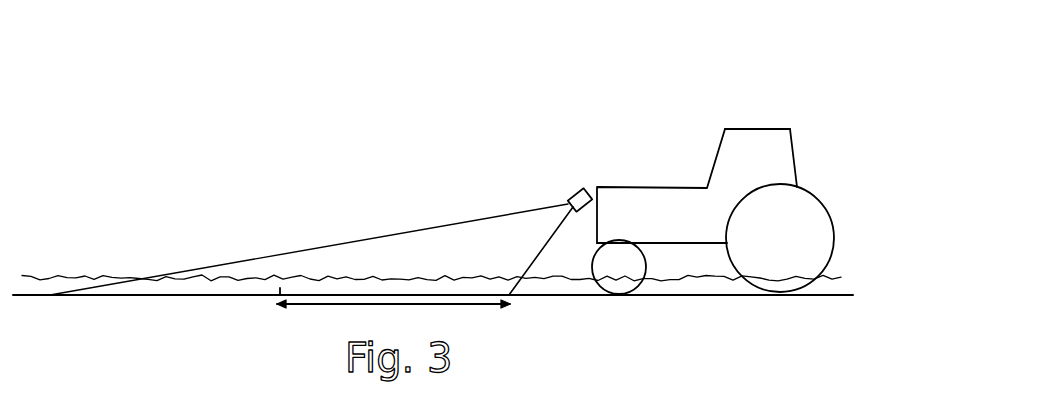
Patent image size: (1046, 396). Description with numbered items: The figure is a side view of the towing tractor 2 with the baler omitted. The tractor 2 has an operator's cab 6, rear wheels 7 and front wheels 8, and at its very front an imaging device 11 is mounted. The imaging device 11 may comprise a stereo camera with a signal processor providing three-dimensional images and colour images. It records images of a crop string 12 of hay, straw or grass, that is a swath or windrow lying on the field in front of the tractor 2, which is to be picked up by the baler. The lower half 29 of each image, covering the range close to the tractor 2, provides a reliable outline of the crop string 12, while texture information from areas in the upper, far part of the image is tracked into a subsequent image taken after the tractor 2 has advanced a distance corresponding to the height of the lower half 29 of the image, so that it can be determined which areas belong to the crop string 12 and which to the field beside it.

The towing tractor 2 is at (713, 185).
The operator's cab 6 is at (767, 128).
The rear wheels 7 is at (778, 278).
The front wheels 8 is at (625, 284).
The imaging device 11 is at (577, 192).
The crop string 12 is at (78, 278).
The lower half of the image 29 is at (303, 304).